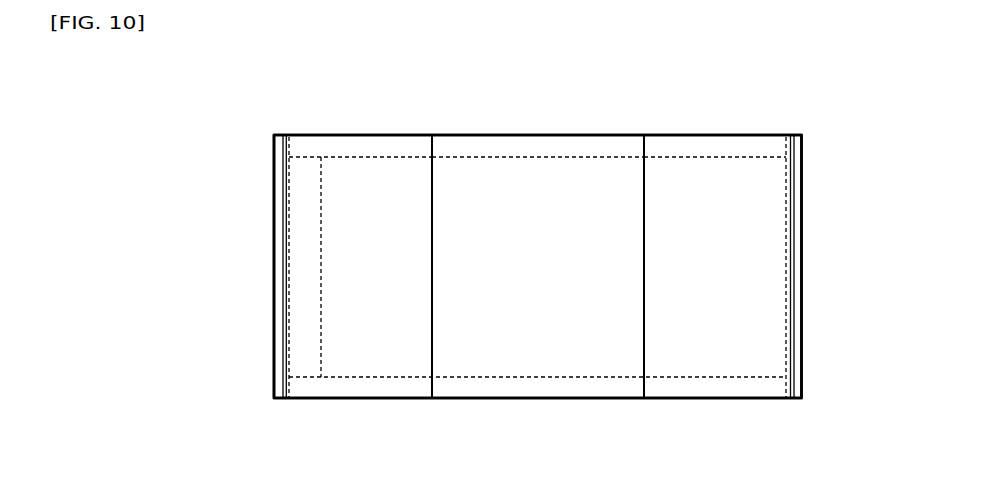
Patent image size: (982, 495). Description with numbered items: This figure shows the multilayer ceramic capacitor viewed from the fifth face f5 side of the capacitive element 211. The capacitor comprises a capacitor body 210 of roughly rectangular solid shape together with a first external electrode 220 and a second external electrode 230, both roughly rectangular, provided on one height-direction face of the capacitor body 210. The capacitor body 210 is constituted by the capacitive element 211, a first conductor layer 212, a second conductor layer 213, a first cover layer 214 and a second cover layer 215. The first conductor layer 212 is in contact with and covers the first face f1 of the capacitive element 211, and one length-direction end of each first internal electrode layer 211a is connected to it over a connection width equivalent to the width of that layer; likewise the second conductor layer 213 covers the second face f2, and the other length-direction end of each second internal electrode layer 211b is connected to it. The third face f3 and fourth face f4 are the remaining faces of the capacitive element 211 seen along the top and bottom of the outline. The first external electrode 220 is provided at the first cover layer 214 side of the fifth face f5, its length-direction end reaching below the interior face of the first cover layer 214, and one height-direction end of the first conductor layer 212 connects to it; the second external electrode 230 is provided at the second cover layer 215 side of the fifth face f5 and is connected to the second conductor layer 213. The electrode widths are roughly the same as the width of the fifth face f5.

The capacitor body 210 is at (278, 134).
The capacitive element 211 is at (530, 134).
The first internal electrode layer 211a is at (310, 157).
The second internal electrode layer 211b is at (447, 173).
The first conductor layer 212 is at (272, 216).
The second conductor layer 213 is at (798, 219).
The first cover layer 214 is at (279, 253).
The second cover layer 215 is at (797, 255).
The first external electrode 220 is at (360, 302).
The second external electrode 230 is at (718, 300).
The first face f1 is at (292, 134).
The second face f2 is at (786, 156).
The third face f3 is at (487, 134).
The fourth face f4 is at (485, 399).
The fifth face f5 is at (577, 205).